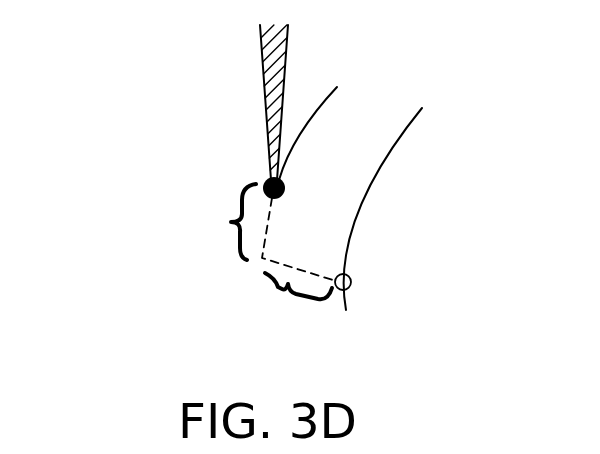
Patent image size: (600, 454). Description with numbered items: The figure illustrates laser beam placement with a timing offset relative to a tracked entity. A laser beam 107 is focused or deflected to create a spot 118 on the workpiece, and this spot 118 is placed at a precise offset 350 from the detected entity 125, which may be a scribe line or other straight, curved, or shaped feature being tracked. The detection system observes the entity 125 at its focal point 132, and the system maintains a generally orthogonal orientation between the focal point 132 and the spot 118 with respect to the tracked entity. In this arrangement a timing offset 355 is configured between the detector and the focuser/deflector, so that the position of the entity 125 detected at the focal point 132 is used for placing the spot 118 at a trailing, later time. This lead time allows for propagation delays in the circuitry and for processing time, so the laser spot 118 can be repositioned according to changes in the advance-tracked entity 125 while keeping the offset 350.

The laser beam 107 is at (262, 46).
The spot 118 is at (265, 183).
The detected entity 125 is at (380, 158).
The focal point 132 is at (353, 290).
The timing offset 355 is at (237, 258).
The offset 350 is at (283, 295).